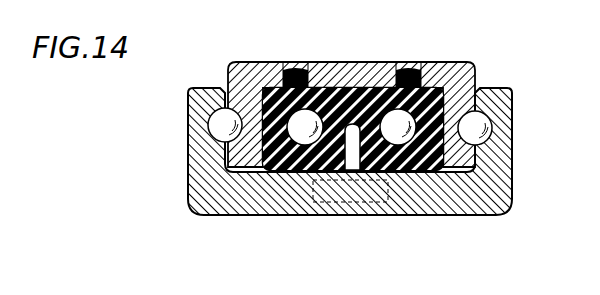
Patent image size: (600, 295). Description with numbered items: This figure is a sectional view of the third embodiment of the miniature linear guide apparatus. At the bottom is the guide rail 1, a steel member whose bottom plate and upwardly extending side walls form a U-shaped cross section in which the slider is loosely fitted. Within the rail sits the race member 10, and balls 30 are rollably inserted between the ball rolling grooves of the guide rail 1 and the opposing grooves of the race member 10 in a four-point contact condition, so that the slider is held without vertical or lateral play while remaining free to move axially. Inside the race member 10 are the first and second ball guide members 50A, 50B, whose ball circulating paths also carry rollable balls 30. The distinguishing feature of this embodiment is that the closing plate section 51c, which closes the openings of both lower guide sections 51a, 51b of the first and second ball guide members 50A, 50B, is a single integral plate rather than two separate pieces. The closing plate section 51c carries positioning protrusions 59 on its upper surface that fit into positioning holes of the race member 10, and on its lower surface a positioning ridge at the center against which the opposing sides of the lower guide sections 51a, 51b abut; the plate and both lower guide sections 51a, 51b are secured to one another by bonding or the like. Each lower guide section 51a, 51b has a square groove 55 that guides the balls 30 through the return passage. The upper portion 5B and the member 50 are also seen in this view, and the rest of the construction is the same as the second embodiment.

The guide rail 1 is at (503, 188).
The race member 10 is at (477, 81).
The top wall of insert 5B is at (497, 49).
The positioning protrusions 59 is at (295, 68).
The sealing member 50 is at (352, 150).
The first ball guide member 50A is at (291, 173).
The second ball guide member 50B is at (400, 164).
The lower guide section 51a is at (268, 164).
The lower guide section 51b is at (415, 169).
The closing plate section 51c is at (230, 108).
The ball 30 is at (484, 130).
The square groove 55 is at (278, 150).